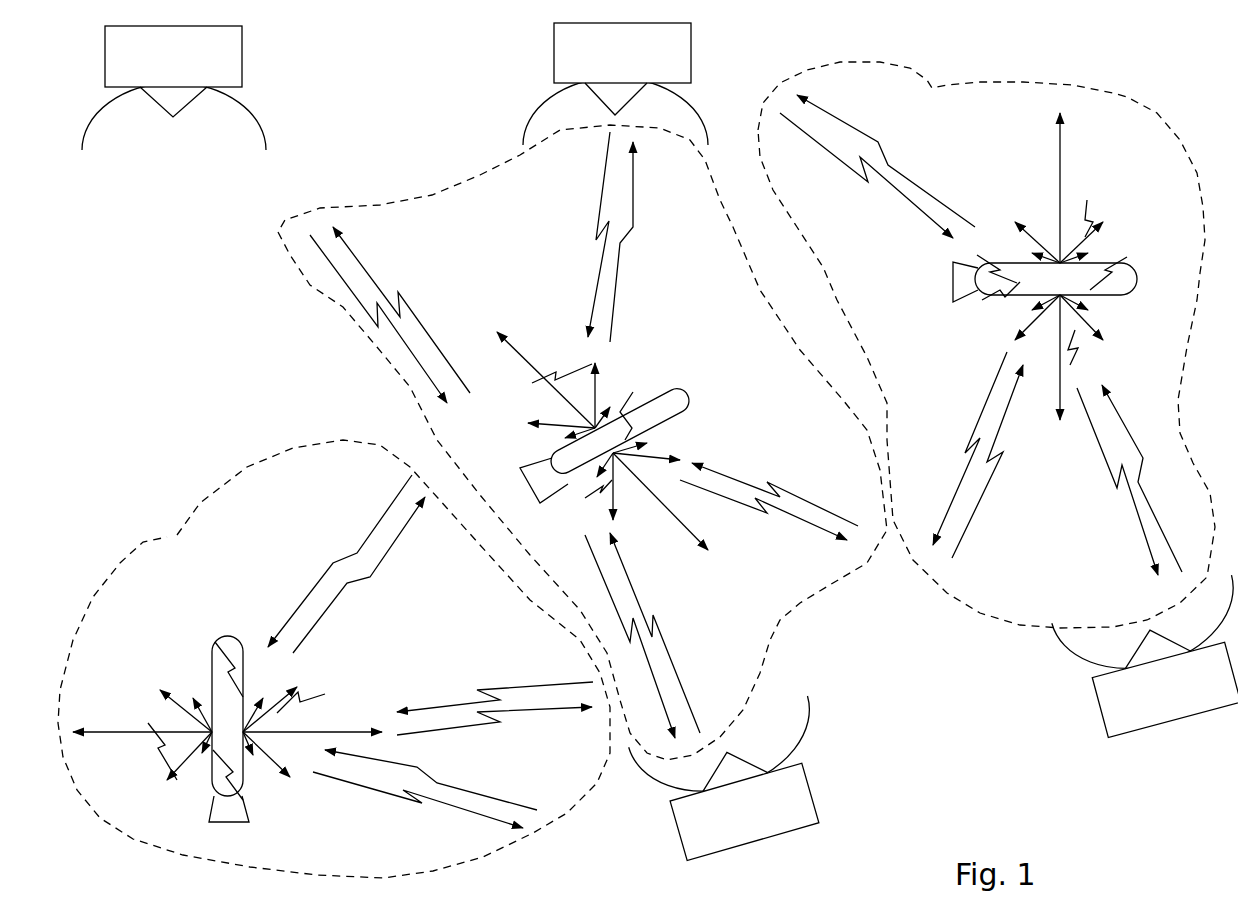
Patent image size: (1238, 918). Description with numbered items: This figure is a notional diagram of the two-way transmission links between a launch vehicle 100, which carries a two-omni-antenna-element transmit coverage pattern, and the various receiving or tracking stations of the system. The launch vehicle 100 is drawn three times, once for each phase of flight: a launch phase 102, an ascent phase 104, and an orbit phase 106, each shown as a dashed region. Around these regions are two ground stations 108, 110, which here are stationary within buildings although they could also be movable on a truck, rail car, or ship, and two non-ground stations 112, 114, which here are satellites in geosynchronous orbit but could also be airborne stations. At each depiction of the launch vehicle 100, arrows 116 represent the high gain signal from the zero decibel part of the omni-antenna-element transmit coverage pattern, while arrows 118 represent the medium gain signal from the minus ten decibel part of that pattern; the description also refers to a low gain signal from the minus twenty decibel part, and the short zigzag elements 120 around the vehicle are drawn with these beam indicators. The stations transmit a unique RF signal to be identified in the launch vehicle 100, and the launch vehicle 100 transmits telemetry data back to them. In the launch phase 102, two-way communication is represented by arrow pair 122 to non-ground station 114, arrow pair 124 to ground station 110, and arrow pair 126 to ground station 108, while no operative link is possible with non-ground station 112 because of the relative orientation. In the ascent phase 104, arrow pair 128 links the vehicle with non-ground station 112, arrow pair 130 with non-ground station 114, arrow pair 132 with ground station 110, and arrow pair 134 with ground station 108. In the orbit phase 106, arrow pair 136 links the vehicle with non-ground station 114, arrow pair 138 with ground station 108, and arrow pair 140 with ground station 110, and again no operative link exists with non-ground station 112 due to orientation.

The launch vehicle 100 is at (673, 542).
The launch phase 102 is at (334, 659).
The ascent phase 104 is at (582, 442).
The orbit phase 106 is at (986, 338).
The ground station 108 is at (735, 790).
The ground station 110 is at (1145, 680).
The non-ground station 112 is at (200, 88).
The non-ground station 114 is at (645, 84).
The arrows 116 is at (566, 422).
The arrows 118 is at (626, 476).
The antennas 120 is at (668, 523).
The arrow pair 122 is at (346, 564).
The arrow pair 124 is at (495, 683).
The arrow pair 126 is at (425, 783).
The arrow pair 128 is at (393, 315).
The arrow pair 130 is at (648, 237).
The arrow pair 132 is at (769, 483).
The arrow pair 134 is at (655, 635).
The arrow pair 136 is at (878, 166).
The arrow pair 138 is at (970, 455).
The arrow pair 140 is at (1112, 480).